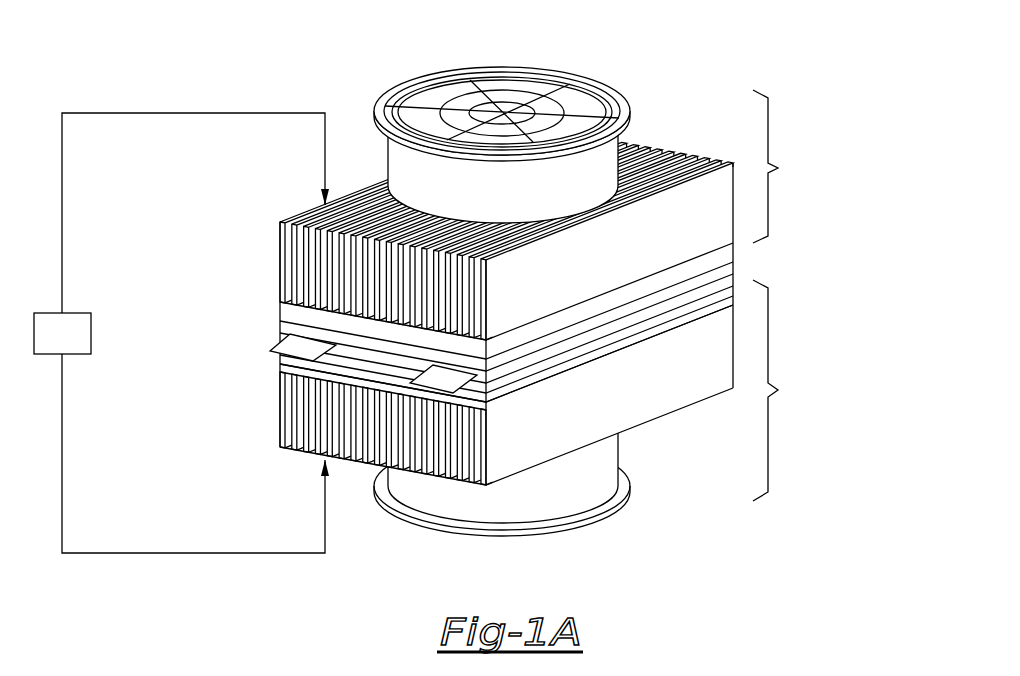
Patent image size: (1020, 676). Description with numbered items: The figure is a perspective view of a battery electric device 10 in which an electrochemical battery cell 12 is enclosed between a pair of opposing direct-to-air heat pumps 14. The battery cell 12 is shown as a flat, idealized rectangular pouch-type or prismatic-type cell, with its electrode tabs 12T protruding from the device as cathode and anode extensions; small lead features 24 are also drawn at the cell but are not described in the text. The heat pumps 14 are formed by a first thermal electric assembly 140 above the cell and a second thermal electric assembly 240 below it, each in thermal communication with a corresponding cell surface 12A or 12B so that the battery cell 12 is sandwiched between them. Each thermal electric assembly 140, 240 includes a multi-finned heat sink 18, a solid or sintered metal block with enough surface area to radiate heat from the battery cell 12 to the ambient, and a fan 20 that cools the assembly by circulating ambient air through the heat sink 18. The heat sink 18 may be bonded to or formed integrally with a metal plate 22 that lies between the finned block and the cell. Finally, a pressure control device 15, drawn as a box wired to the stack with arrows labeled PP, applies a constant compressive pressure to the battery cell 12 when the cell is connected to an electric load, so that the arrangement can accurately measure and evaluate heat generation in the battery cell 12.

The battery electric device 10 is at (530, 291).
The electrochemical battery cell 12 is at (278, 333).
The cell surface 12A is at (738, 261).
The cell surface 12B is at (694, 305).
The electrode tabs 12T is at (270, 348).
The direct-to-air heat pumps 14 is at (704, 99).
The pressure control device 15 is at (52, 345).
The heat sink 18 is at (596, 270).
The fan 20 is at (527, 511).
The metal plate 22 is at (713, 256).
The electrical leads 24 is at (322, 362).
The first thermal electric assembly 140 is at (601, 155).
The second thermal electric assembly 240 is at (791, 390).